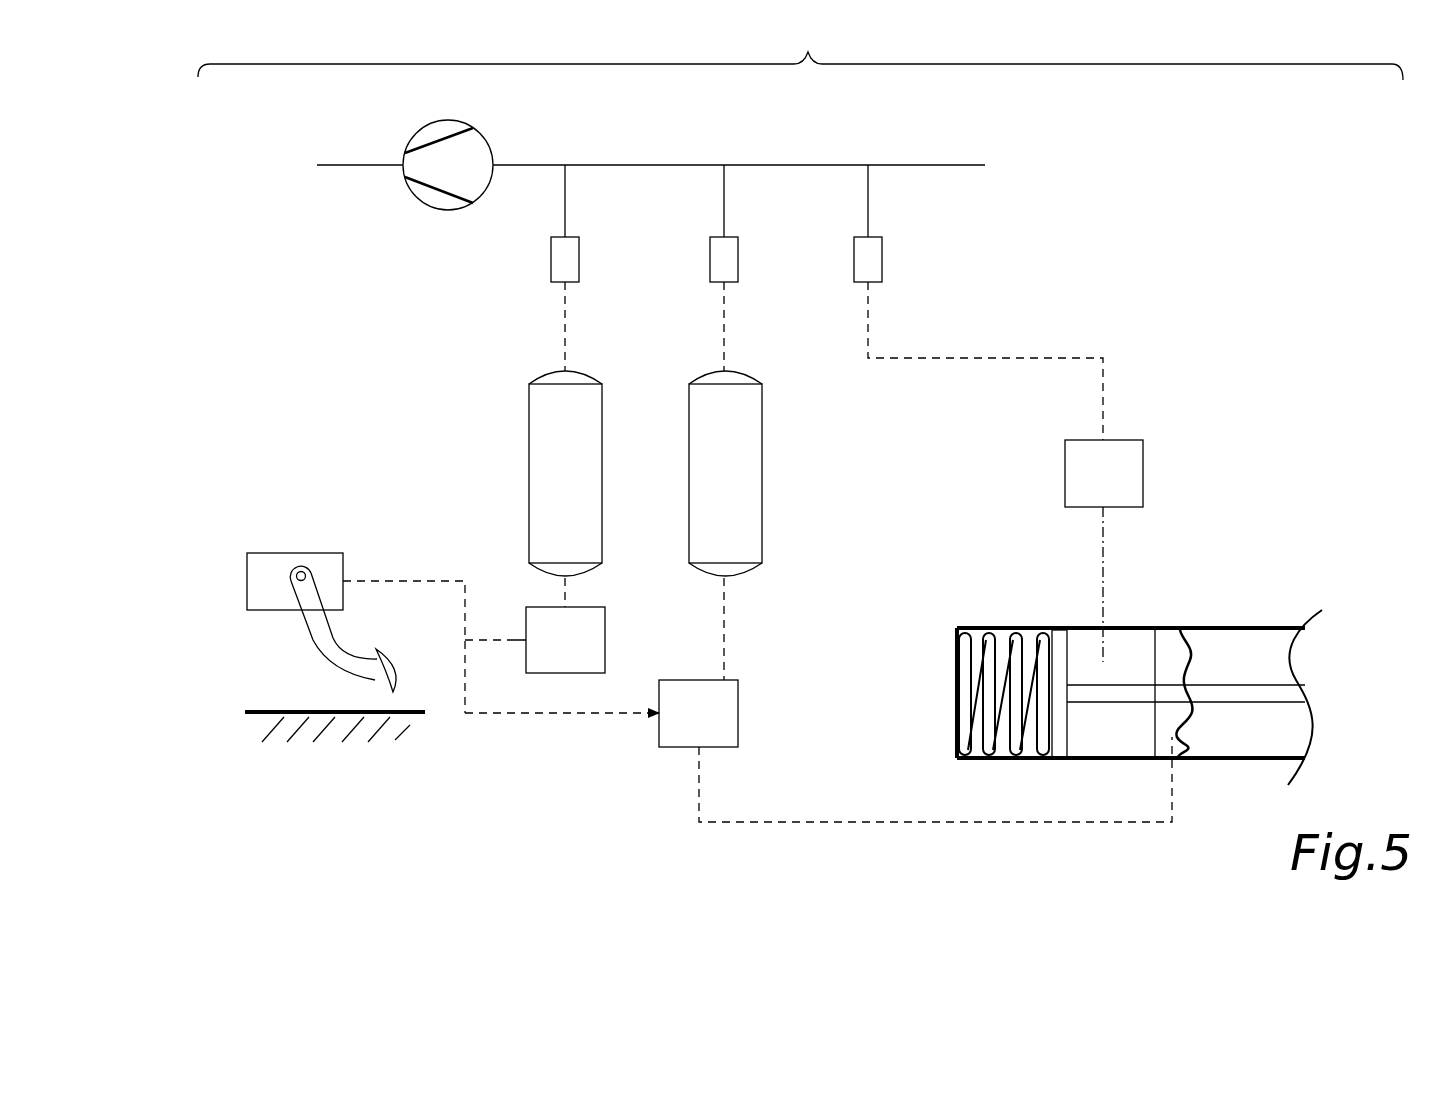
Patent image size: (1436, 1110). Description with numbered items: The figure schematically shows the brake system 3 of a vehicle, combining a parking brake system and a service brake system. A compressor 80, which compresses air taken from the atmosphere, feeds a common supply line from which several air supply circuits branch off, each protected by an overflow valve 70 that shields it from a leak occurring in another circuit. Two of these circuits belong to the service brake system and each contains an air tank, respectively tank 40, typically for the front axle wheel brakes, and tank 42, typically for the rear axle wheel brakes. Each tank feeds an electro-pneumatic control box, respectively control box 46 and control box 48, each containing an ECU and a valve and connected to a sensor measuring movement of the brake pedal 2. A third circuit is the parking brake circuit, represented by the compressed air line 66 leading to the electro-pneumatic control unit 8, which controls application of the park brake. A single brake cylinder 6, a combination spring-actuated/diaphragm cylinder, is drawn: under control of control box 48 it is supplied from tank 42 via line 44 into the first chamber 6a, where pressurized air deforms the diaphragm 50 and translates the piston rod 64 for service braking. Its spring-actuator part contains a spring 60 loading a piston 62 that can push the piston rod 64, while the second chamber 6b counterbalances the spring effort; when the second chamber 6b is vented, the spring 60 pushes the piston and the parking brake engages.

The brake system 3 is at (800, 53).
The compressor 80 is at (428, 193).
The valve 70 is at (553, 254).
The compressed air line 66 is at (1025, 358).
The air tank 40 is at (565, 473).
The air tank 42 is at (725, 473).
The control unit 8 is at (1104, 473).
The control box 46 is at (565, 625).
The control box 48 is at (698, 662).
The brake pedal 2 is at (244, 637).
The line 44 is at (935, 822).
The brake cylinder 6 is at (1089, 677).
The spring 60 is at (967, 667).
The piston 62 is at (1059, 640).
The piston rod 64 is at (1237, 695).
The first chamber 6a is at (1163, 648).
The second chamber 6b is at (1134, 648).
The diaphragm 50 is at (1193, 716).